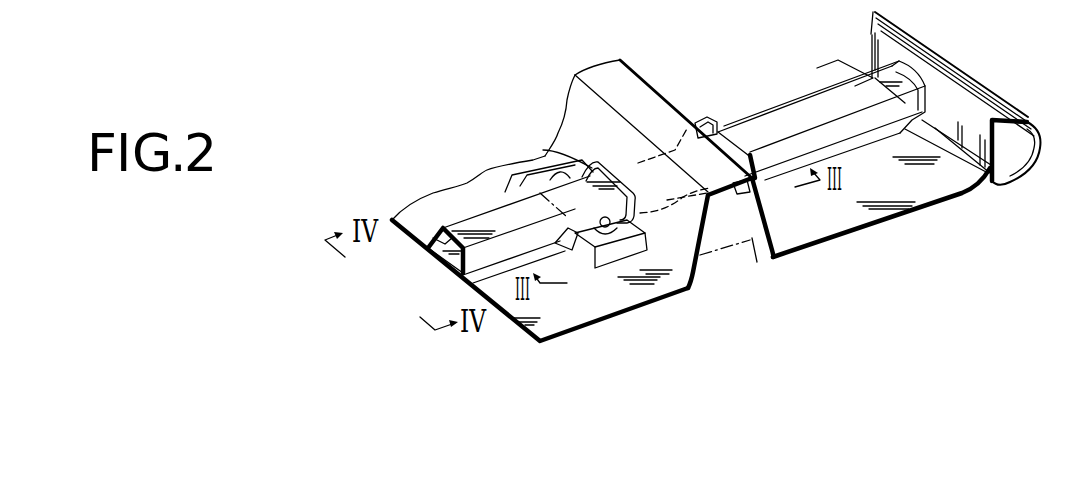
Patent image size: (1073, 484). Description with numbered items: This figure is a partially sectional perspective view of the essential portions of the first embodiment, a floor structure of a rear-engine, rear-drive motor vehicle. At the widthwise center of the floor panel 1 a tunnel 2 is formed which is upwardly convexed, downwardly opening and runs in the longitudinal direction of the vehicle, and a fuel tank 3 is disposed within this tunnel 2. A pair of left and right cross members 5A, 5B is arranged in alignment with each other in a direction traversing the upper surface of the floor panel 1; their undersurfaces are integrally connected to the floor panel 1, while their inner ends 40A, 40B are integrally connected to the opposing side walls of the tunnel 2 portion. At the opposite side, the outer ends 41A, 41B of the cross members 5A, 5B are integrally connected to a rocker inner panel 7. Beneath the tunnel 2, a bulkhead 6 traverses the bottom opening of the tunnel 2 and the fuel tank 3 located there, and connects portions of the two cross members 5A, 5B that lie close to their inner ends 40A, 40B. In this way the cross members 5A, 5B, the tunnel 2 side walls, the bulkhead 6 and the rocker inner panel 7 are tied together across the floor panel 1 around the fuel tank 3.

The floor panel 1 is at (632, 292).
The tunnel 2 is at (686, 252).
The fuel tank 3 is at (752, 260).
The left cross member 5A is at (492, 216).
The right cross member 5B is at (788, 118).
The bulkhead 6 is at (638, 163).
The rocker inner panel 7 is at (870, 42).
The inner end of left cross member 40A is at (557, 160).
The inner end of right cross member 40B is at (712, 130).
The outer end of left cross member 41A is at (447, 232).
The outer end of right cross member 41B is at (828, 63).